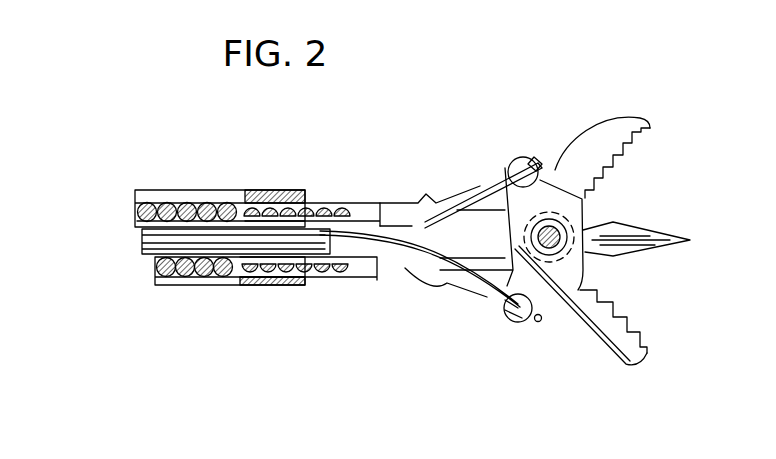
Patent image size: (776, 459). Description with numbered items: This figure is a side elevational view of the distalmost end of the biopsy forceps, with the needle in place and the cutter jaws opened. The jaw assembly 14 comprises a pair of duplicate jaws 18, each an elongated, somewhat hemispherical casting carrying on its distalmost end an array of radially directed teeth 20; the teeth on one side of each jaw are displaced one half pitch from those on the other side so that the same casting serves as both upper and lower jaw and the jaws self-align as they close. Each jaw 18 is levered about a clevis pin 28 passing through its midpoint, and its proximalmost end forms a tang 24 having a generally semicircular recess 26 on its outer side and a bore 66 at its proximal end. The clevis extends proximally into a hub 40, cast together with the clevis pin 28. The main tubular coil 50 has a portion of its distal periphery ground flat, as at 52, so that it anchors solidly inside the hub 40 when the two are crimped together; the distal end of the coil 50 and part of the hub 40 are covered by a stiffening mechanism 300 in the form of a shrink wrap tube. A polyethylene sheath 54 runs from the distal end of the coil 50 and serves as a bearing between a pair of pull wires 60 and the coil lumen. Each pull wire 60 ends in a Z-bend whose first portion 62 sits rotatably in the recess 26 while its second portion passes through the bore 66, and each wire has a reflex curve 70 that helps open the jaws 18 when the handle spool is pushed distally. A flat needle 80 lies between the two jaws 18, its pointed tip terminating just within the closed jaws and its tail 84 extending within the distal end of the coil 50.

The jaw assembly 14 is at (598, 221).
The jaw 18 is at (633, 120).
The teeth 20 is at (618, 168).
The tang 24 is at (514, 156).
The recess 26 is at (556, 170).
The clevis pin 28 is at (584, 211).
The hub 40 is at (286, 288).
The main tubular coil 50 is at (186, 186).
The ground flat portion 52 is at (262, 203).
The polyethylene sheath 54 is at (347, 196).
The pull wire 60 is at (241, 233).
The first portion 62 is at (540, 158).
The bore 66 is at (505, 182).
The reflex curve 70 is at (432, 205).
The needle 80 is at (670, 233).
The tail 84 is at (341, 238).
The stiffening mechanism 300 is at (152, 204).